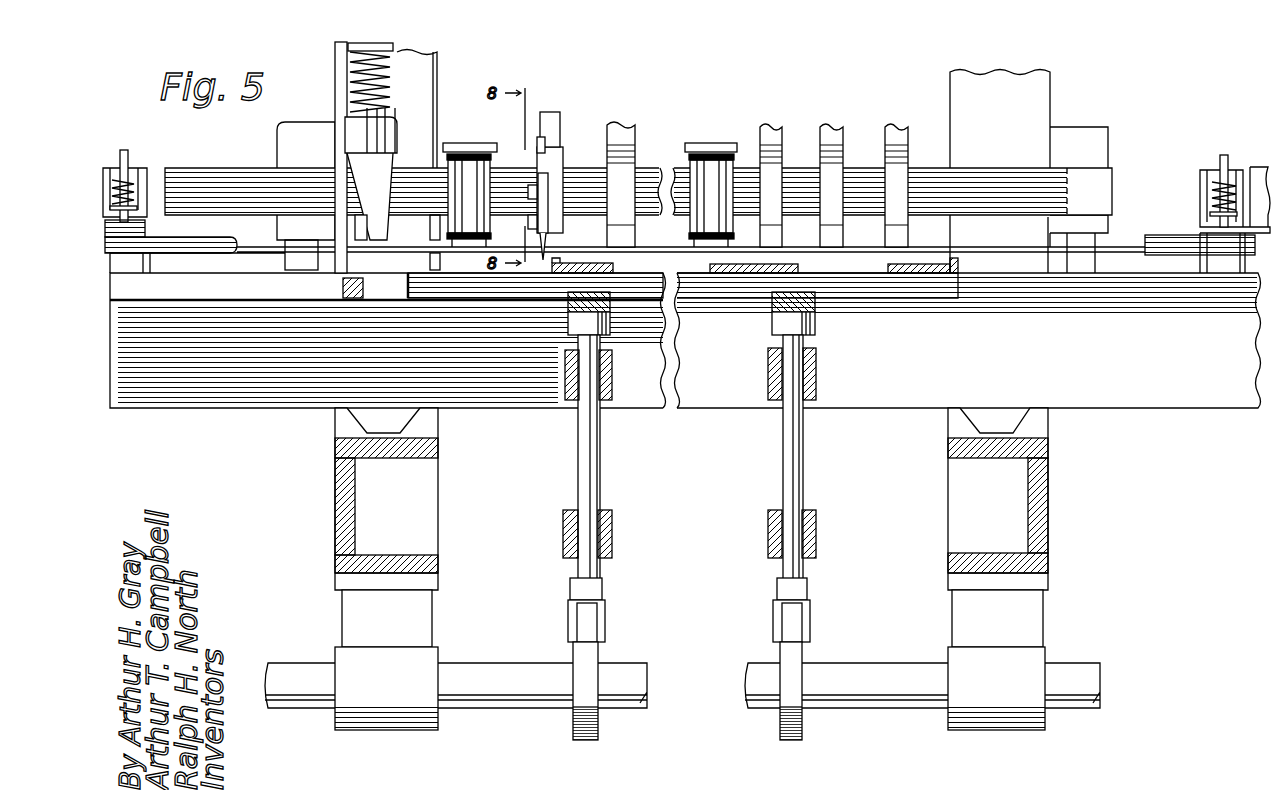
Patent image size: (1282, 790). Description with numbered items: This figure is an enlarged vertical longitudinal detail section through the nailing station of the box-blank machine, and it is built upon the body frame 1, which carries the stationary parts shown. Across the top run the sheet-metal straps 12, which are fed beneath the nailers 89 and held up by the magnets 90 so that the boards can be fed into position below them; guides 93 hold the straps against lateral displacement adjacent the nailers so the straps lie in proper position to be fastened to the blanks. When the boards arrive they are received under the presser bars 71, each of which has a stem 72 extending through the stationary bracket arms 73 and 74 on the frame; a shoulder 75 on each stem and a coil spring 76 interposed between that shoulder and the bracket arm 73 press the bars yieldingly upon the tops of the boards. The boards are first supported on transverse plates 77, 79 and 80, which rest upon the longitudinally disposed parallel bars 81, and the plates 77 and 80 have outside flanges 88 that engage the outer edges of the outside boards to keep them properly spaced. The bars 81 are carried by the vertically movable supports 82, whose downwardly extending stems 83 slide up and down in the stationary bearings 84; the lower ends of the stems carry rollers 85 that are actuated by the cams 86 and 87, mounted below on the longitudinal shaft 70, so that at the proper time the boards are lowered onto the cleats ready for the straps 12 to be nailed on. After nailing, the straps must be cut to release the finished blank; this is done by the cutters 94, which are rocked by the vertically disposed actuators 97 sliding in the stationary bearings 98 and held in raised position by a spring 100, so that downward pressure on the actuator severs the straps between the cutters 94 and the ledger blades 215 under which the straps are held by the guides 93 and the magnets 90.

The body frame 1 is at (240, 404).
The sheet-metal straps 12 is at (1118, 247).
The shaft 70 is at (497, 688).
The presser bars 71 is at (216, 242).
The stems 72 is at (124, 150).
The bracket arm 73 is at (141, 170).
The bracket arm 74 is at (146, 229).
The shoulder 75 is at (137, 208).
The coil spring 76 is at (134, 188).
The plate 77 is at (603, 271).
The plate 79 is at (795, 268).
The plate 80 is at (892, 268).
The parallel bars 81 is at (633, 288).
The vertically movable supports 82 is at (570, 318).
The stems 83 is at (578, 467).
The stationary bearings 84 is at (606, 388).
The rollers 85 is at (593, 622).
The cam 86 is at (590, 735).
The cam 87 is at (793, 735).
The outside flanges 88 is at (558, 262).
The nailers 89 is at (630, 130).
The magnets 90 is at (463, 168).
The guides 93 is at (548, 241).
The cutters 94 is at (343, 288).
The actuators 97 is at (348, 60).
The stationary bearings 98 is at (345, 136).
The spring 100 is at (350, 78).
The ledger blades 215 is at (368, 233).